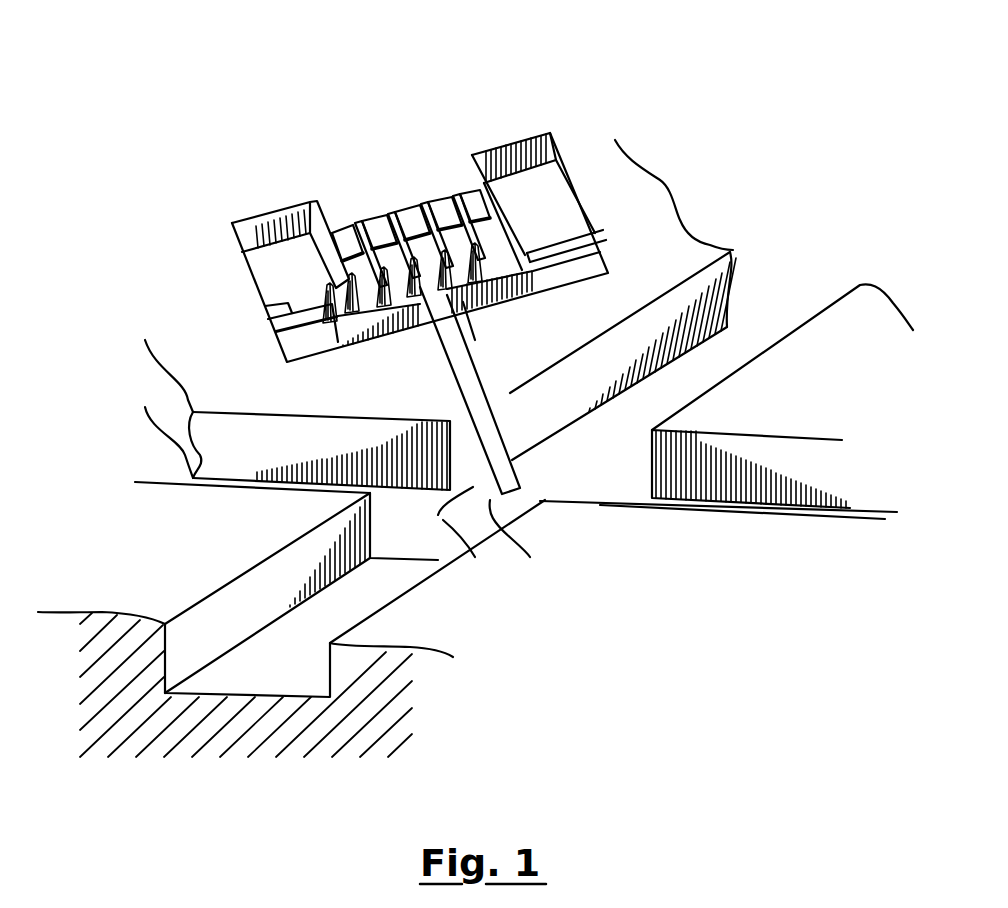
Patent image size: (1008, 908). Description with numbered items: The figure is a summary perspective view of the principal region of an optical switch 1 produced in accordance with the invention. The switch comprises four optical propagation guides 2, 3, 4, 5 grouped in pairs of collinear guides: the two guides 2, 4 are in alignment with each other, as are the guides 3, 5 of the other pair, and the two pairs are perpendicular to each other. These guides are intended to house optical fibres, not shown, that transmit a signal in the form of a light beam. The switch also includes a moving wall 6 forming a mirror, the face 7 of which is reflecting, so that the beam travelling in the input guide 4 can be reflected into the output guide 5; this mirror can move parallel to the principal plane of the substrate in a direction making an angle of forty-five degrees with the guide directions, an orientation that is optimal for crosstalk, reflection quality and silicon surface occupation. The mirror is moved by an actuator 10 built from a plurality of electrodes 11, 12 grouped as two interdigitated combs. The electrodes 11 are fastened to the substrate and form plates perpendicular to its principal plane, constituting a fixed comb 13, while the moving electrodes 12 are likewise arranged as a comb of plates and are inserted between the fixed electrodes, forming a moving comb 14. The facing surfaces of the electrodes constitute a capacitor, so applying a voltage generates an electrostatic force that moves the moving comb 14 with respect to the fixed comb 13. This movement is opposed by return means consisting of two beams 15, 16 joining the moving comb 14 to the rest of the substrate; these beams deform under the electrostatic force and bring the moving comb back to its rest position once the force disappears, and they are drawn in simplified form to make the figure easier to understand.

The optical switch 1 is at (537, 750).
The optical propagation guide 2 is at (762, 290).
The optical propagation guide 3 is at (810, 463).
The input guide 4 is at (288, 643).
The output guide 5 is at (257, 440).
The moving wall 6 is at (495, 512).
The reflecting face 7 is at (462, 540).
The actuator 10 is at (580, 100).
The fixed electrodes 11 is at (400, 228).
The moving electrodes 12 is at (518, 240).
The fixed comb 13 is at (350, 208).
The moving comb 14 is at (500, 293).
The beam 15 is at (553, 233).
The beam 16 is at (270, 311).